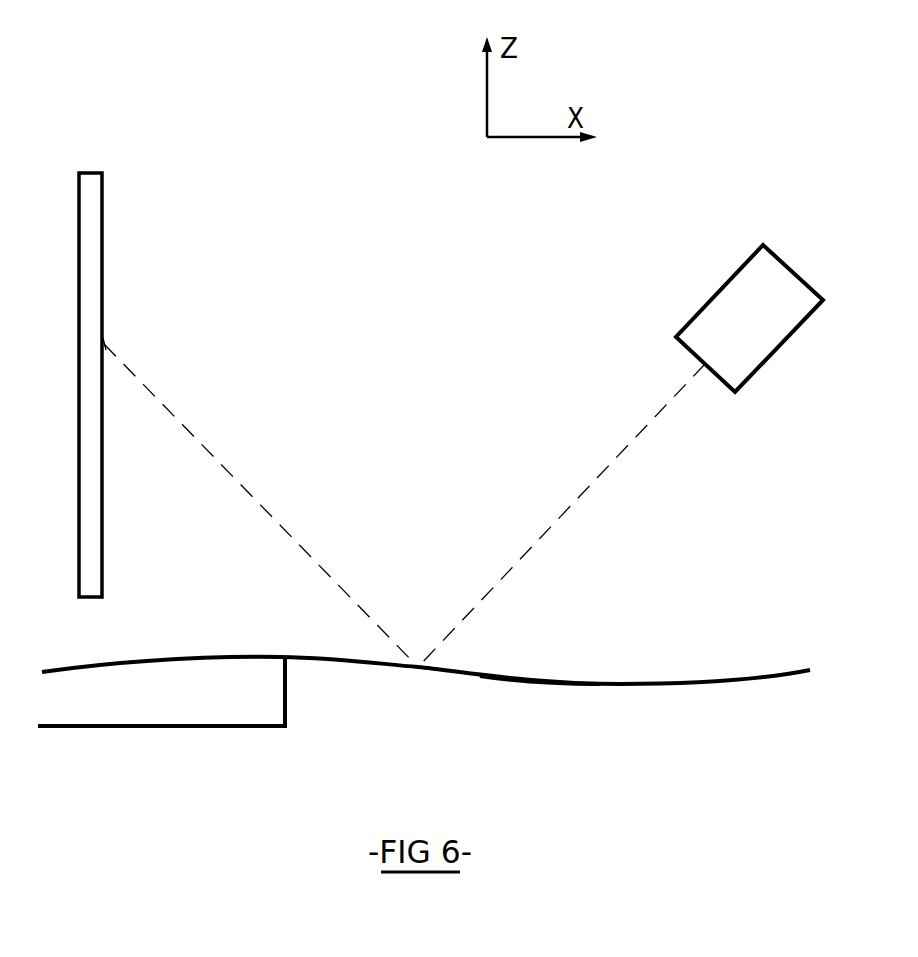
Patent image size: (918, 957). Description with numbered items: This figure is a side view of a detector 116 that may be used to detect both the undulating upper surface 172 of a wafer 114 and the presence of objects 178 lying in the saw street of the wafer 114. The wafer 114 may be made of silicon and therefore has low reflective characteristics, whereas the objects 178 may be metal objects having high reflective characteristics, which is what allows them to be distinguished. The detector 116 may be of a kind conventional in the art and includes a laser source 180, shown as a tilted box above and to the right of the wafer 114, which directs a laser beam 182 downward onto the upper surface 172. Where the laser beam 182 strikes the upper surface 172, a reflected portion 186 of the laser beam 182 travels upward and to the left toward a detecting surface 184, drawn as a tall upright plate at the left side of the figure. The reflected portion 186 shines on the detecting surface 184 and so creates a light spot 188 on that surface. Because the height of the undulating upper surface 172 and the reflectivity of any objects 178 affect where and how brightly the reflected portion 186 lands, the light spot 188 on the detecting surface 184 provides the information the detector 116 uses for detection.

The detector 116 is at (77, 73).
The wafer 114 is at (728, 677).
The upper surface 172 is at (550, 681).
The objects 178 is at (158, 677).
The laser source 180 is at (728, 284).
The laser beam 182 is at (568, 512).
The detecting surface 184 is at (104, 268).
The reflected portion 186 is at (220, 466).
The light spot 188 is at (107, 343).